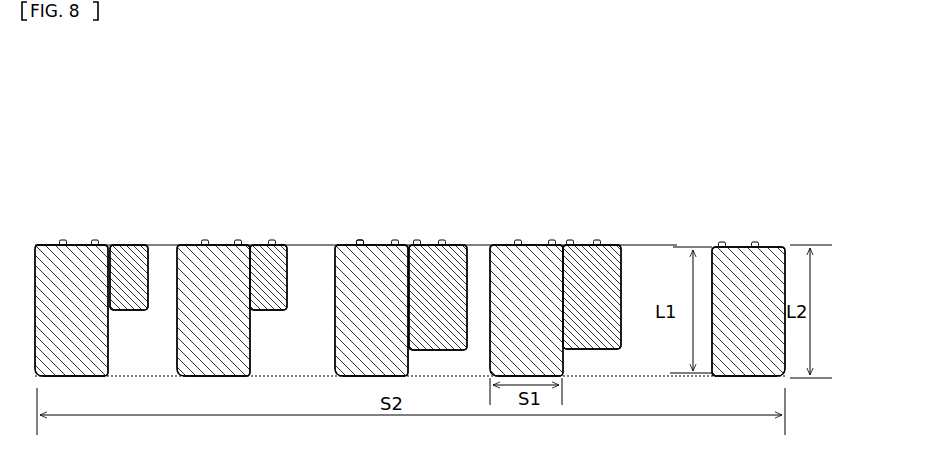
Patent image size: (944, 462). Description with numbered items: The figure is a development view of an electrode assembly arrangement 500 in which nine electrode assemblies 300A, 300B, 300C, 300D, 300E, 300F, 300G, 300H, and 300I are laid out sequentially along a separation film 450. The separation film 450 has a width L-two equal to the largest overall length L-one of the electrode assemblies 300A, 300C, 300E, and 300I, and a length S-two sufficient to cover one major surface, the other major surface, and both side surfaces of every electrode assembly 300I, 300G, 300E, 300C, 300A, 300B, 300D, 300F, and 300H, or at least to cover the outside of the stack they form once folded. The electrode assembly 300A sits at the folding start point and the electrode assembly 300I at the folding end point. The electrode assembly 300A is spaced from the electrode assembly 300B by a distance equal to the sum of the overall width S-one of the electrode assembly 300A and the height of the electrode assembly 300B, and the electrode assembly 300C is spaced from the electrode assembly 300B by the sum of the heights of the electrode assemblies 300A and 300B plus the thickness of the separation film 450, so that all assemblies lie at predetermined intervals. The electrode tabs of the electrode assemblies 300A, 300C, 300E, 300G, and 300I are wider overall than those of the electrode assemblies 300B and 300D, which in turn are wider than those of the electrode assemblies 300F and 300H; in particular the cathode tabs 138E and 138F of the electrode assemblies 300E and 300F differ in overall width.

The battery module 500 is at (78, 111).
The separation film 450 is at (648, 275).
The cathode tab 138E is at (365, 245).
The cathode tab 138F is at (273, 245).
The electrode assembly 300I is at (78, 245).
The electrode assembly 300H is at (143, 245).
The electrode assembly 300G is at (223, 258).
The electrode assembly 300F is at (280, 245).
The electrode assembly 300E is at (347, 245).
The electrode assembly 300D is at (457, 245).
The electrode assembly 300C is at (540, 245).
The electrode assembly 300B is at (613, 245).
The electrode assembly 300A is at (738, 247).